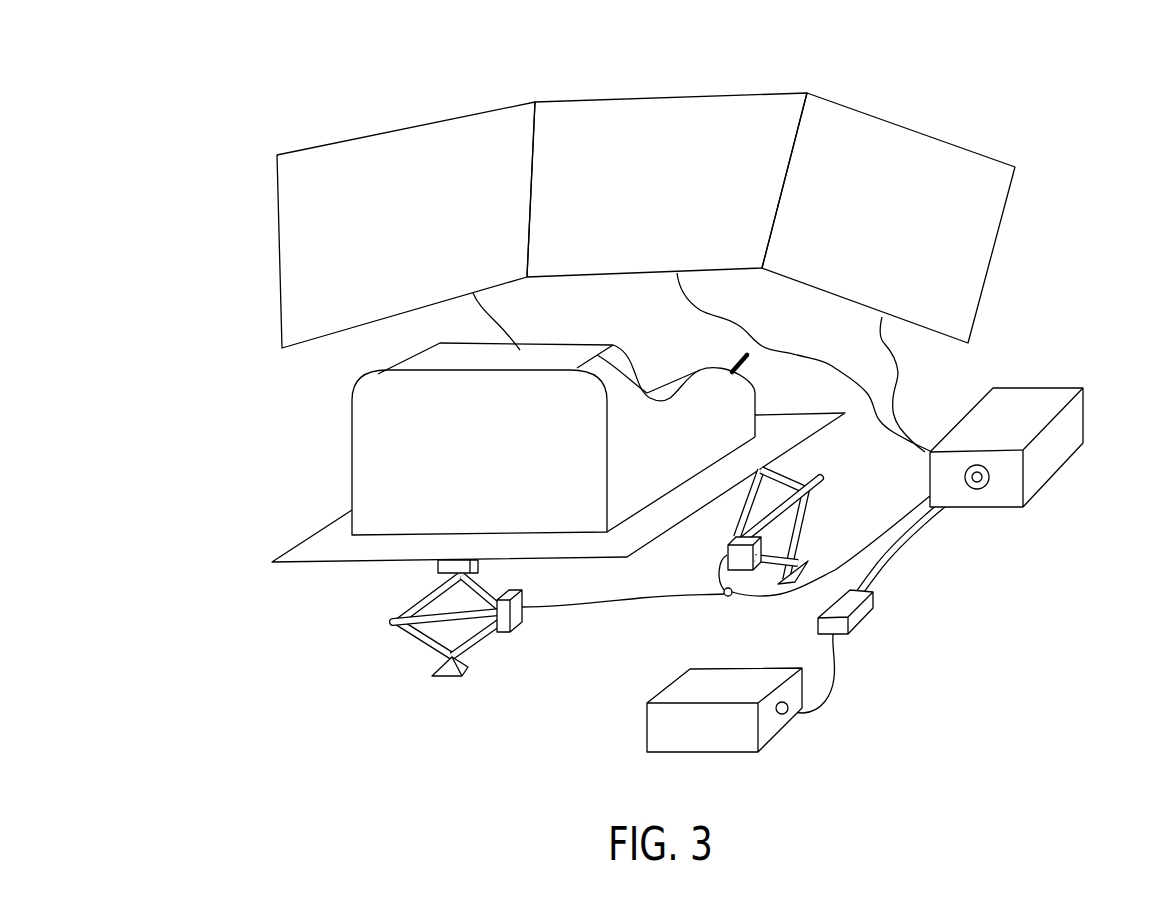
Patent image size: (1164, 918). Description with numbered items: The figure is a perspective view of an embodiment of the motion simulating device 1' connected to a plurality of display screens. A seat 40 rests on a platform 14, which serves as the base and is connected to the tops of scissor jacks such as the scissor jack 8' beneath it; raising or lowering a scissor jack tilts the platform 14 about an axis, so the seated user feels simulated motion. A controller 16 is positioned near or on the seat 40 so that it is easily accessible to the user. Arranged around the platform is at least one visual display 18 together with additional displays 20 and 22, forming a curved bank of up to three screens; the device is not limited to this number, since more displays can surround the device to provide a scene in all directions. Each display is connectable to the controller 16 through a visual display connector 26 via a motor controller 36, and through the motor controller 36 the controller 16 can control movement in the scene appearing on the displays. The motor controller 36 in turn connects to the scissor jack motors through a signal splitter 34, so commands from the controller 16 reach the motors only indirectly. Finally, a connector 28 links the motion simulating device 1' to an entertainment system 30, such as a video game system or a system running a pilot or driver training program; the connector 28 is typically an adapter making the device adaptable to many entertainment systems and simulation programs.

The motion simulating device 1' is at (649, 384).
The second scissor jack 8' is at (453, 642).
The platform 14 is at (299, 582).
The controller 16 is at (743, 366).
The visual display 18 is at (673, 92).
The additional display 20 is at (426, 120).
The additional display 22 is at (941, 133).
The visual display connector 26 is at (500, 320).
The connector 28 is at (860, 613).
The entertainment system 30 is at (735, 698).
The signal splitter 34 is at (730, 597).
The motor controller 36 is at (1053, 477).
The seat 40 is at (487, 465).